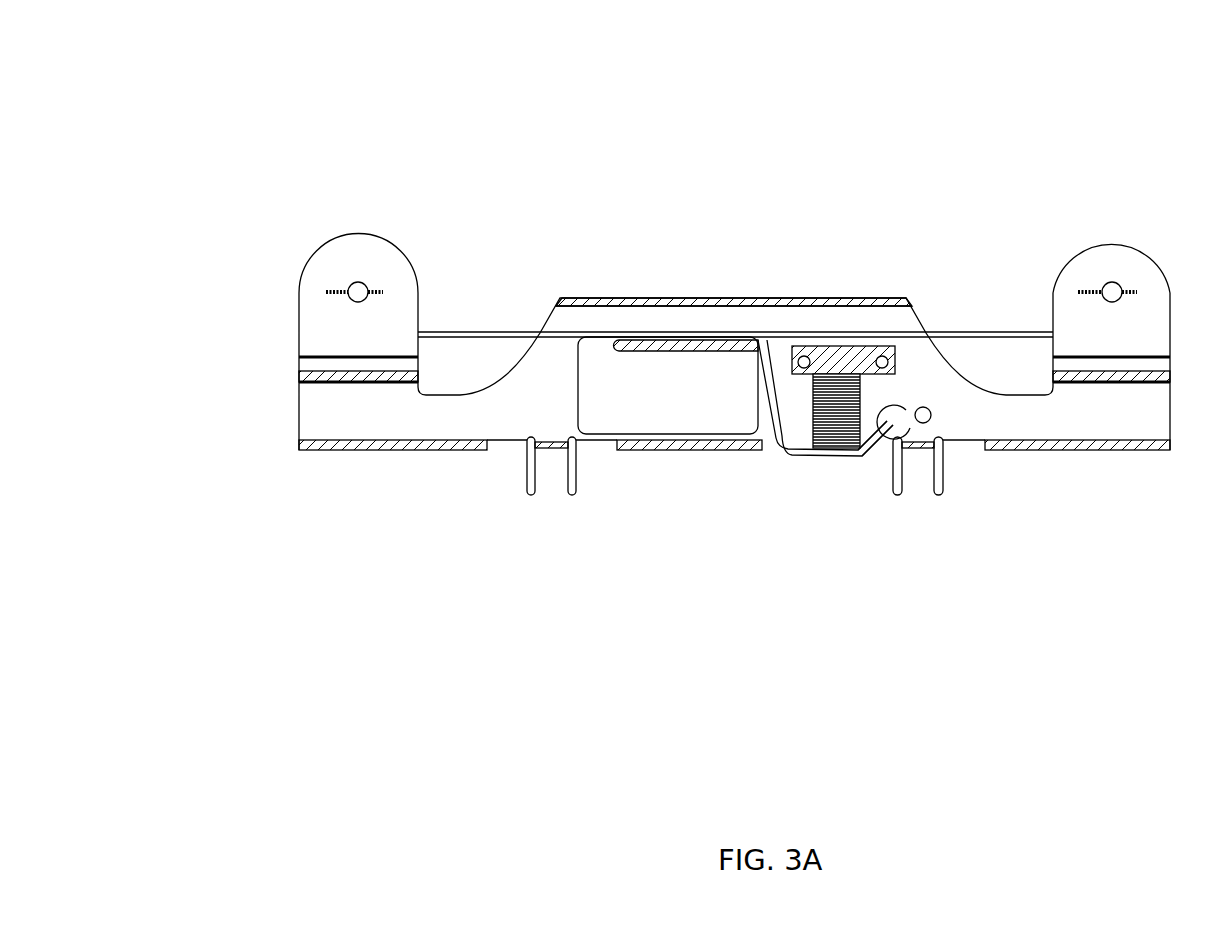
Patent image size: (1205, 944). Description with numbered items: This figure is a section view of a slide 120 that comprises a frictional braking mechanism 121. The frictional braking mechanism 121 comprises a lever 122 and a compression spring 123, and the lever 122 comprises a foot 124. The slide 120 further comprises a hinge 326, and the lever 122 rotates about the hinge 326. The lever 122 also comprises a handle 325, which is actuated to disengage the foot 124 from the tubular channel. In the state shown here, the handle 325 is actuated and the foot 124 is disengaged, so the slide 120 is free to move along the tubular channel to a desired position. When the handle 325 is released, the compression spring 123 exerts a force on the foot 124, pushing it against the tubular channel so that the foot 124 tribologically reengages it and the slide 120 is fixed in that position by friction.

The slide 120 is at (297, 72).
The frictional braking mechanism 121 is at (813, 483).
The lever 122 is at (766, 385).
The compression spring 123 is at (858, 384).
The foot 124 is at (847, 456).
The handle 325 is at (634, 350).
The hinge 326 is at (935, 415).